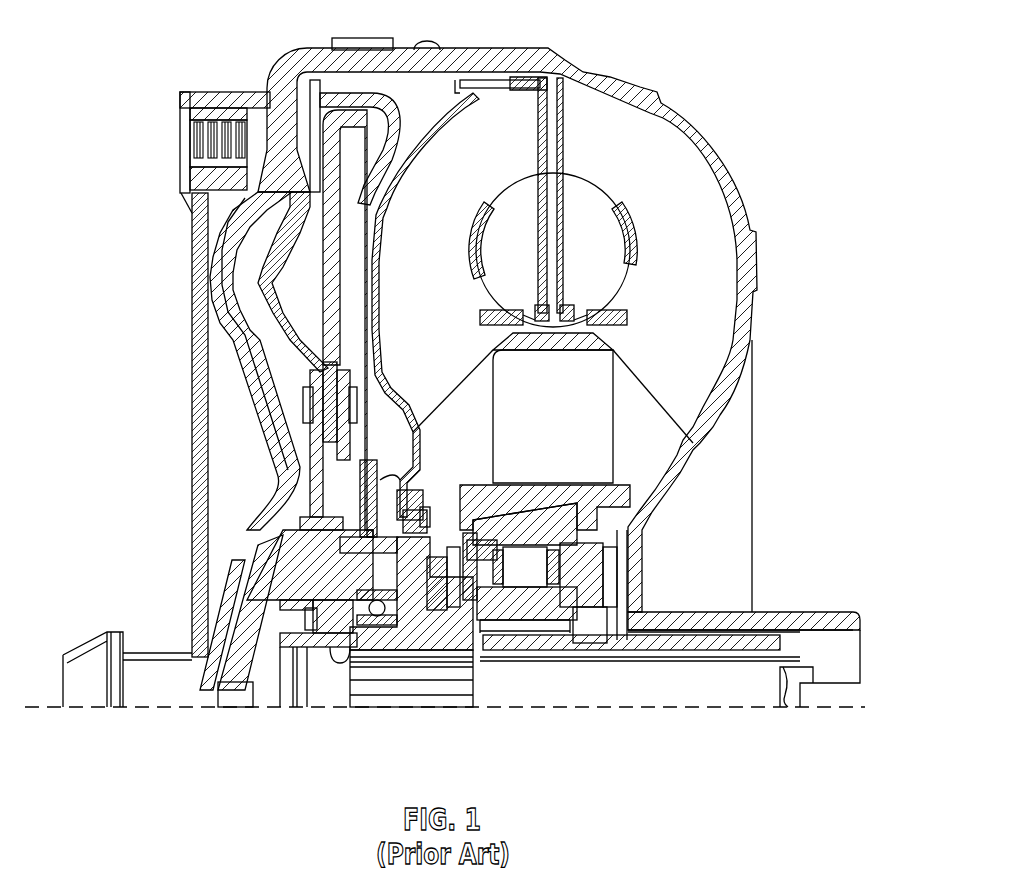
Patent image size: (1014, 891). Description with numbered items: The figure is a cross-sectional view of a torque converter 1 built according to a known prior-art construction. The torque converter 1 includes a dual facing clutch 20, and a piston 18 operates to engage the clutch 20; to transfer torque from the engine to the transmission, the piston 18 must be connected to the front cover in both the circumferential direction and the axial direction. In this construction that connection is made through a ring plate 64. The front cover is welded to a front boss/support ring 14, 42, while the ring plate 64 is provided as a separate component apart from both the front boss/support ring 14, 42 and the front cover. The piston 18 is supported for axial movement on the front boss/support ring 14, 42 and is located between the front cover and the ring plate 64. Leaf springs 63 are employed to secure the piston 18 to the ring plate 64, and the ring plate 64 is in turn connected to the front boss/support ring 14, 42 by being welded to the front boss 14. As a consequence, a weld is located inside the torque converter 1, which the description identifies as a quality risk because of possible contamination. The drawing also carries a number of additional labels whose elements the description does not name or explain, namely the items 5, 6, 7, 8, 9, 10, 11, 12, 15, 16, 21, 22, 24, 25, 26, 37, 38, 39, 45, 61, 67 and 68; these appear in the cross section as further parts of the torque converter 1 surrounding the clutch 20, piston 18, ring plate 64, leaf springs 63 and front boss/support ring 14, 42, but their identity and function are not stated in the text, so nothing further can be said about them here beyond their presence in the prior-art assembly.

The torque converter 1 is at (699, 49).
The axis of rotation 5 is at (44, 703).
The impeller shell 6 is at (695, 205).
The turbine 7 is at (474, 164).
The stator 8 is at (565, 405).
The one-way clutch 9 is at (520, 567).
The stator hub 10 is at (777, 657).
The side plate 11 is at (613, 583).
The turbine hub 12 is at (397, 513).
The front boss 14 is at (160, 693).
The hub 15 is at (422, 640).
The lockup clutch 16 is at (288, 272).
The piston 18 is at (275, 352).
The dual facing clutch 20 is at (192, 238).
The hub 21 is at (372, 620).
The flange 22 is at (700, 623).
The bearing 24 is at (330, 653).
The stator shaft 25 is at (675, 695).
The pump hub 26 is at (621, 701).
The flange 37 is at (247, 637).
The plate 38 is at (243, 365).
The seal 39 is at (235, 700).
The support ring 42 is at (300, 590).
The spline 45 is at (453, 647).
The spring 61 is at (262, 112).
The leaf springs 63 is at (337, 367).
The ring plate 64 is at (320, 450).
The seal 67 is at (297, 707).
The seal 68 is at (790, 675).